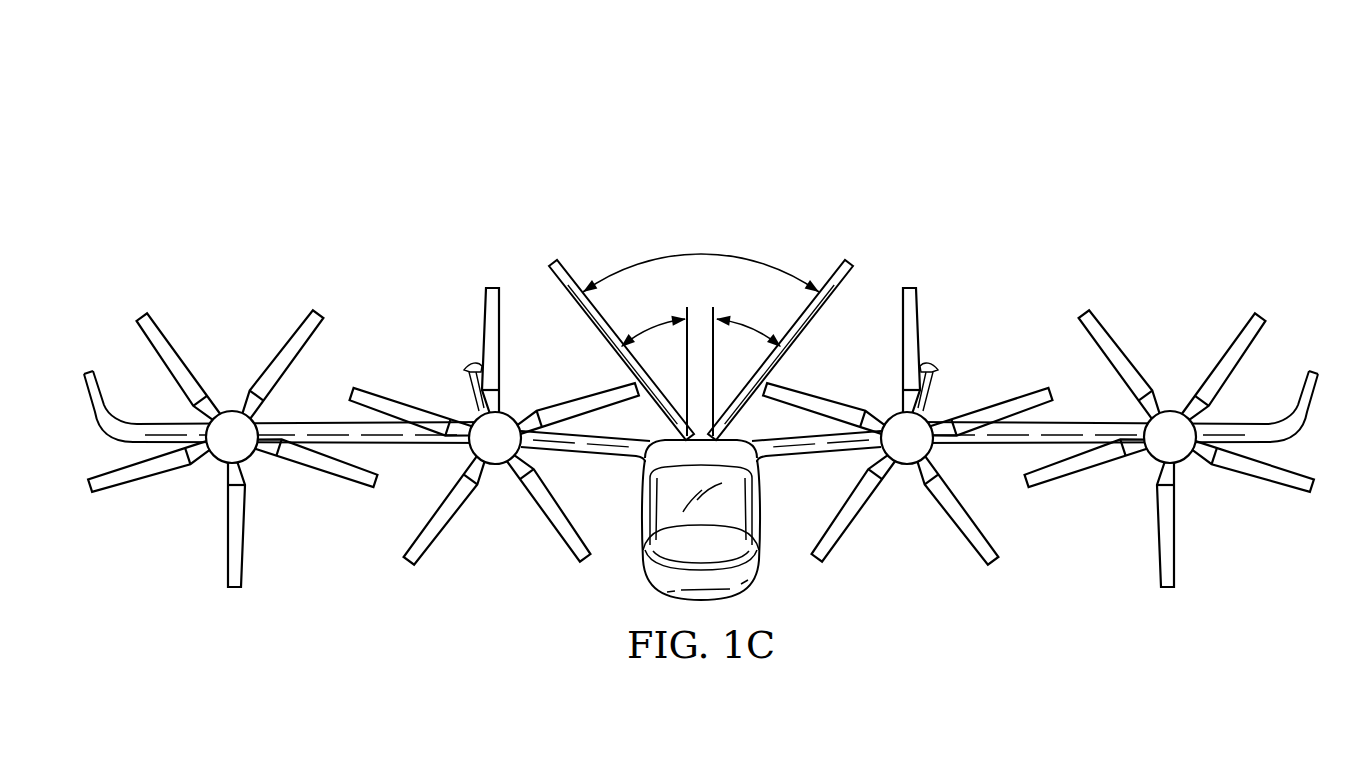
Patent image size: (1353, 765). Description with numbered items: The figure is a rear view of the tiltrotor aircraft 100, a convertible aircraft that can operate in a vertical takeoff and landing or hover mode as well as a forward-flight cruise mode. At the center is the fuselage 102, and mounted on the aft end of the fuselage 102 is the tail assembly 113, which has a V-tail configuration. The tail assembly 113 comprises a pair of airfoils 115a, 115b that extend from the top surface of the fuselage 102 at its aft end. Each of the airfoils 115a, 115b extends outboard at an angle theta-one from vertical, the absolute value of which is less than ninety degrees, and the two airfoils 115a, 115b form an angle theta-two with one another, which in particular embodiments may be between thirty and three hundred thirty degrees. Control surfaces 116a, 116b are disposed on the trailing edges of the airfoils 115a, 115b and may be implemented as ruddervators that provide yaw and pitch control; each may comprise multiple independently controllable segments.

The tiltrotor aircraft 100 is at (500, 143).
The fuselage 102 is at (760, 577).
The tail assembly 113 is at (757, 221).
The airfoil 115a is at (568, 278).
The airfoil 115b is at (834, 278).
The control surface 116a is at (595, 333).
The control surface 116b is at (807, 333).